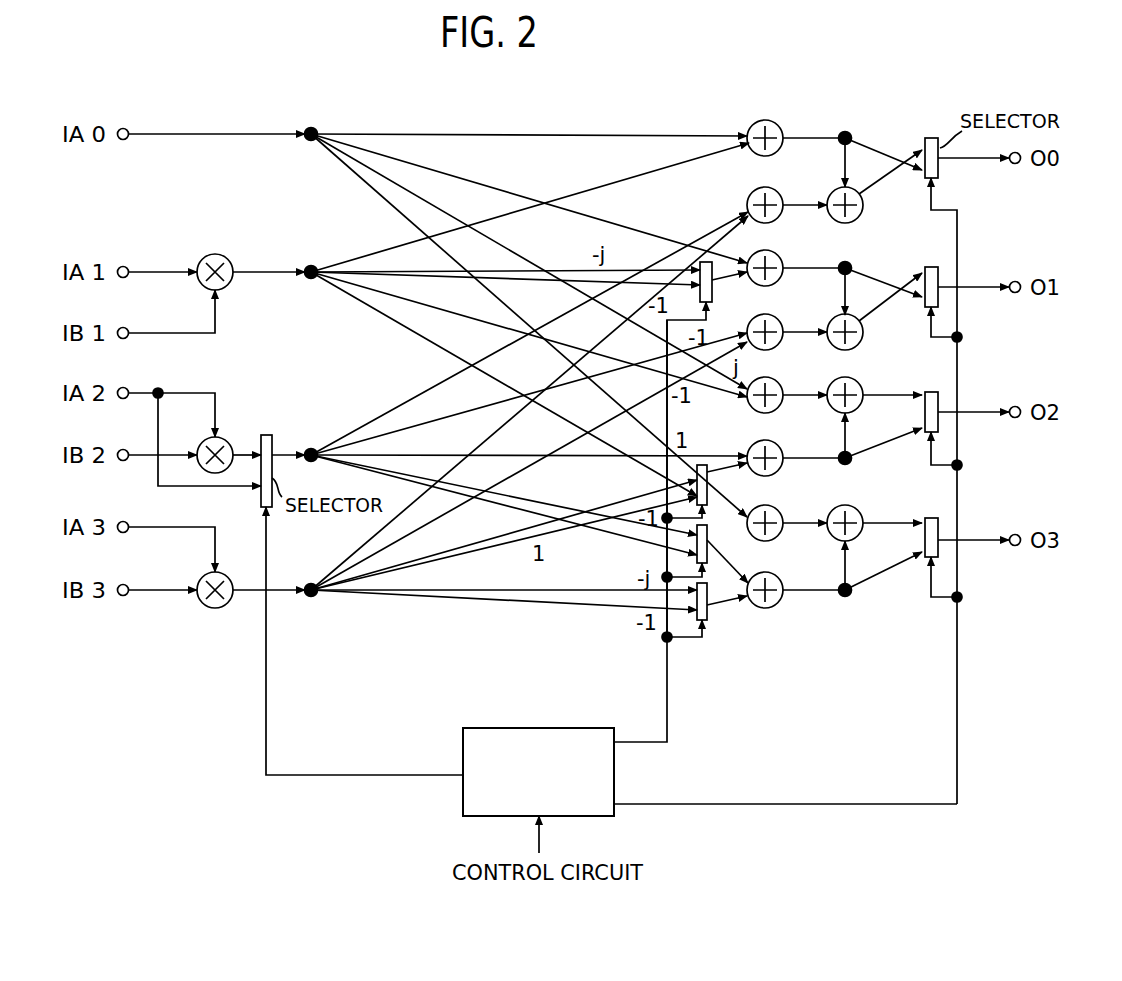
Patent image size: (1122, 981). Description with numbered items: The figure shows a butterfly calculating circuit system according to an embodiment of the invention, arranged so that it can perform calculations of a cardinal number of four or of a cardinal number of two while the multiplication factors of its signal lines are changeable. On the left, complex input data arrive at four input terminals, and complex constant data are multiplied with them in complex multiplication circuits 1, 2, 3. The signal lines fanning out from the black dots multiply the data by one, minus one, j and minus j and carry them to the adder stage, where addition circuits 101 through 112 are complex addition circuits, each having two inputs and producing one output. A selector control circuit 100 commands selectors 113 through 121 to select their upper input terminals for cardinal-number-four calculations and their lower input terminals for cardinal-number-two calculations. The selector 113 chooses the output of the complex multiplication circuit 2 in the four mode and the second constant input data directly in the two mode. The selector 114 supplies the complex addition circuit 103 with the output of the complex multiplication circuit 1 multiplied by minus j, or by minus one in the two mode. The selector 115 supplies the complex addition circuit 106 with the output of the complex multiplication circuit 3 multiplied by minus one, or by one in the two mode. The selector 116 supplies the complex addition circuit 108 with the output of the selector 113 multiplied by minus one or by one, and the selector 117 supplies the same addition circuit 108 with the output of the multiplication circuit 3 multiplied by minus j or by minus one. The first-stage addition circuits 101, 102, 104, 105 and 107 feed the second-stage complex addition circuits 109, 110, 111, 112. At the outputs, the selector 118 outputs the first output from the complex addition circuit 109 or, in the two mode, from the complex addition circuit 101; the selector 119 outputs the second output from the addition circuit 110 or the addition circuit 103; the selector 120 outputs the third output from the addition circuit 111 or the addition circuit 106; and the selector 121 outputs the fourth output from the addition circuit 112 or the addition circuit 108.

The complex multiplication circuit 1 is at (215, 253).
The complex multiplication circuit 2 is at (229, 441).
The complex multiplication circuit 3 is at (215, 608).
The selector control circuit 100 is at (543, 728).
The complex addition circuit 101 is at (766, 120).
The complex addition circuit 102 is at (773, 189).
The complex addition circuit 103 is at (773, 252).
The complex addition circuit 104 is at (773, 316).
The complex addition circuit 105 is at (771, 379).
The complex addition circuit 106 is at (774, 442).
The complex addition circuit 107 is at (773, 507).
The complex addition circuit 108 is at (774, 574).
The complex addition circuit 109 is at (856, 221).
The complex addition circuit 110 is at (862, 345).
The complex addition circuit 111 is at (862, 383).
The complex addition circuit 112 is at (857, 506).
The selector 113 is at (270, 432).
The selector 114 is at (703, 262).
The selector 115 is at (701, 465).
The selector 116 is at (697, 548).
The selector 117 is at (708, 618).
The selector 118 is at (930, 136).
The selector 119 is at (930, 267).
The selector 120 is at (938, 393).
The selector 121 is at (930, 518).